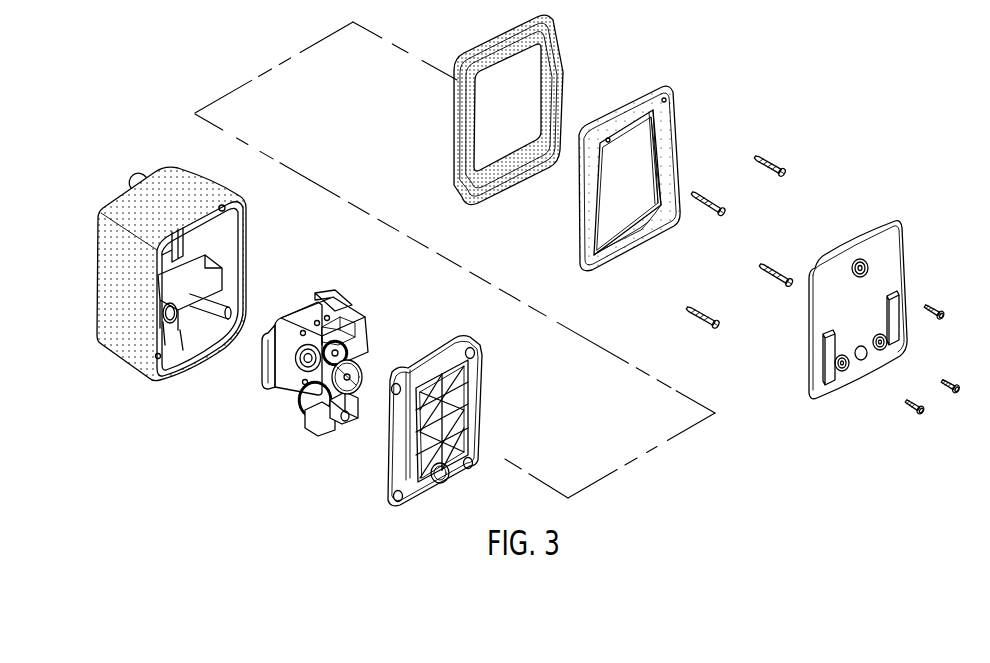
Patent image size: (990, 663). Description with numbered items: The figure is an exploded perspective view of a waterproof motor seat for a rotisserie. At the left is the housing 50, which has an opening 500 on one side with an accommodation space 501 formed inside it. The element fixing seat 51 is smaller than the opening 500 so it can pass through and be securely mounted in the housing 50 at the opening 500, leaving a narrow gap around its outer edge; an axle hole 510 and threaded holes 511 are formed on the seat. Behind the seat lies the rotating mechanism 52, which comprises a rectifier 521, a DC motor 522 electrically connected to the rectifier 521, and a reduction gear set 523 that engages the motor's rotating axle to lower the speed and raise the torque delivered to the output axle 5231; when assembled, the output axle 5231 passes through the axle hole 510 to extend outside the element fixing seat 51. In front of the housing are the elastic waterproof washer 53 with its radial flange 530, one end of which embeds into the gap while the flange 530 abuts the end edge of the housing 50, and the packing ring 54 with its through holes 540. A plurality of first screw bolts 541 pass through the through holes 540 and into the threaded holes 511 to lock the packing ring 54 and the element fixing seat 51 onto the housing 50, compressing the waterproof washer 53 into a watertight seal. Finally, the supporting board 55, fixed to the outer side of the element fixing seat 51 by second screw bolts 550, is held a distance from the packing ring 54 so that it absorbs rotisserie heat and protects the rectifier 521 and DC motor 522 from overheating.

The housing 50 is at (200, 248).
The opening 500 is at (247, 242).
The accommodation space 501 is at (227, 225).
The element fixing seat 51 is at (430, 421).
The axle hole 510 is at (440, 474).
The threaded holes 511 is at (388, 408).
The rotating mechanism 52 is at (318, 353).
The rectifier 521 is at (352, 332).
The DC motor 522 is at (262, 343).
The reduction gear set 523 is at (296, 428).
The output axle 5231 is at (334, 408).
The waterproof washer 53 is at (533, 129).
The flange 530 is at (467, 197).
The packing ring 54 is at (658, 173).
The through holes 540 is at (687, 207).
The first screw bolts 541 is at (792, 280).
The supporting board 55 is at (907, 240).
The second screw bolts 550 is at (953, 392).